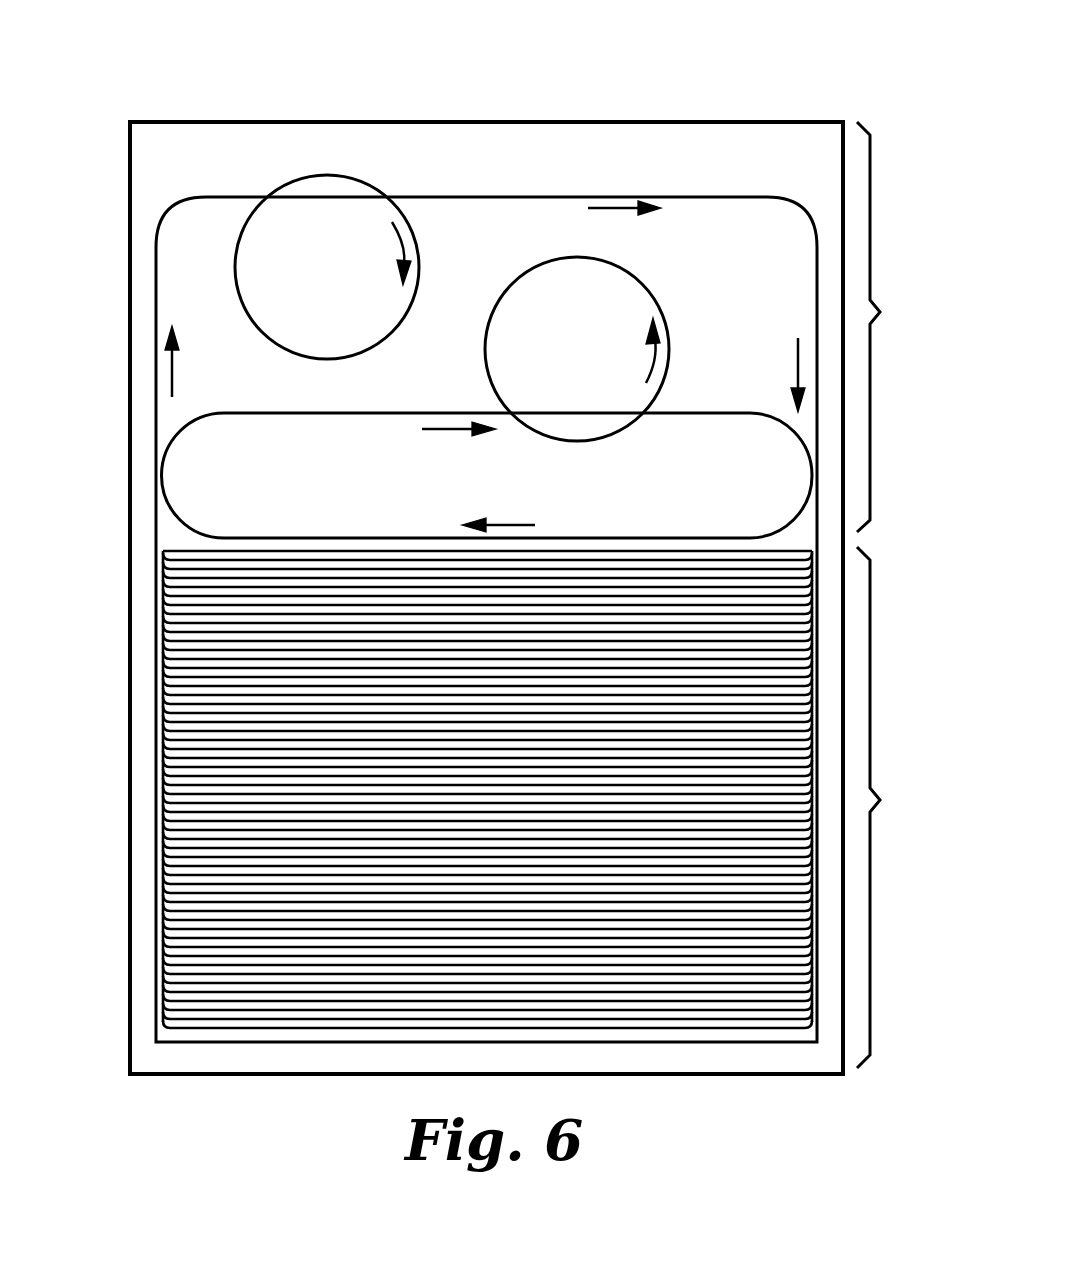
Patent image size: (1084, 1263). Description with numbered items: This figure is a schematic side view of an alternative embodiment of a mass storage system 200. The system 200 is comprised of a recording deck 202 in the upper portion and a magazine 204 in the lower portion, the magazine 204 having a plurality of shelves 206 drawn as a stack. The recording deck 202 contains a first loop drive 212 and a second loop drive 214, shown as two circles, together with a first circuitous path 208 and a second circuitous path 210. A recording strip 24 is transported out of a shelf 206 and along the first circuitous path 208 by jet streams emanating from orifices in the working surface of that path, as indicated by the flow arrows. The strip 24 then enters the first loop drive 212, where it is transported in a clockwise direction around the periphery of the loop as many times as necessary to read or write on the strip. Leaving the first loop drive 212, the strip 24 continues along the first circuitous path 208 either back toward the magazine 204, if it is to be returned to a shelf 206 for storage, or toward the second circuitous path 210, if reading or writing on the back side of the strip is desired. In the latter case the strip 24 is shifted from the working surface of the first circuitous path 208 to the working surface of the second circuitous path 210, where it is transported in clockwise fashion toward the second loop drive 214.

The mass storage system 200 is at (588, 62).
The recording deck 202 is at (902, 327).
The magazine 204 is at (902, 807).
The shelves 206 is at (678, 552).
The first circuitous path 208 is at (156, 292).
The second circuitous path 210 is at (388, 413).
The first loop drive 212 is at (317, 175).
The second loop drive 214 is at (618, 293).
The recording strip 24 is at (172, 378).